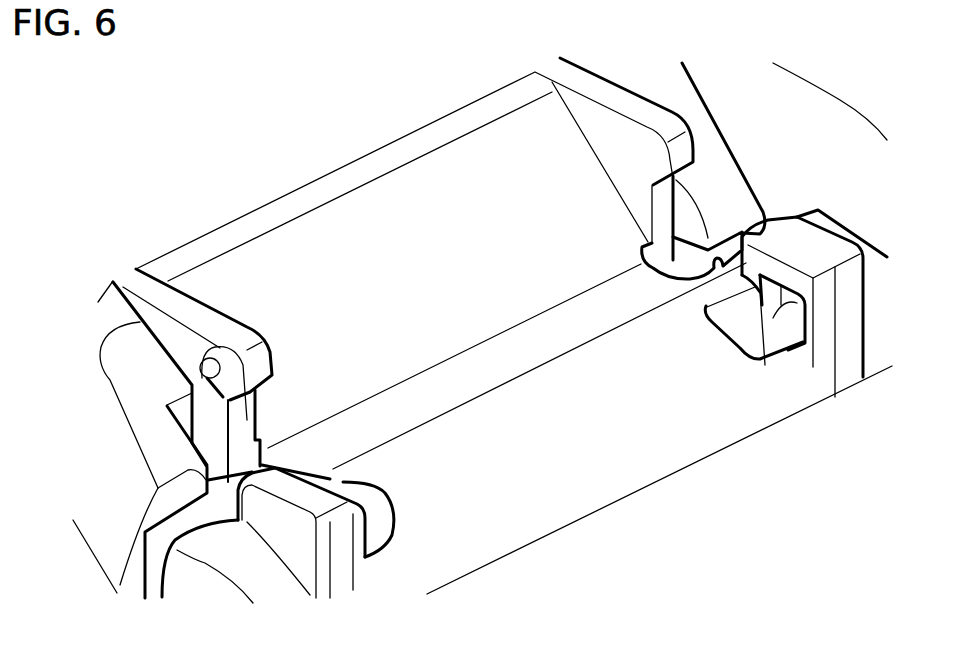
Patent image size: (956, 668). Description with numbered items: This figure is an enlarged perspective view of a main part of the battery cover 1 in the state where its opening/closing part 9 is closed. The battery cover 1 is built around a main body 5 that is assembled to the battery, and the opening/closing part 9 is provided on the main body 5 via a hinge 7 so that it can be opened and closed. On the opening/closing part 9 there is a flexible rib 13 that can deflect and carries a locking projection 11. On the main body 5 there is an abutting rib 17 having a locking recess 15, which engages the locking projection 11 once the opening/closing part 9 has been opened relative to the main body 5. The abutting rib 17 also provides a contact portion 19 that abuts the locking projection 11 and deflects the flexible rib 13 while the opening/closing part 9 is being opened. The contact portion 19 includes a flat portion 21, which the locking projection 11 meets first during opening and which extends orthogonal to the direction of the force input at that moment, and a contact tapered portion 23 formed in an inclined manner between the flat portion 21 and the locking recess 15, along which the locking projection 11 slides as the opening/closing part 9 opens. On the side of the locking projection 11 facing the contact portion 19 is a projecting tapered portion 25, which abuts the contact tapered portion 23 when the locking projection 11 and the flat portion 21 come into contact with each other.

The battery cover 1 is at (403, 118).
The main body 5 is at (613, 455).
The hinge 7 is at (453, 378).
The opening/closing part 9 is at (155, 242).
The locking projection 11 is at (207, 373).
The flexible rib 13 is at (265, 343).
The locking recess 15 is at (797, 303).
The abutting rib 17 is at (340, 557).
The contact portion 19 is at (328, 476).
The flat portion 21 is at (800, 242).
The contact tapered portion 23 is at (778, 232).
The projecting tapered portion 25 is at (240, 385).